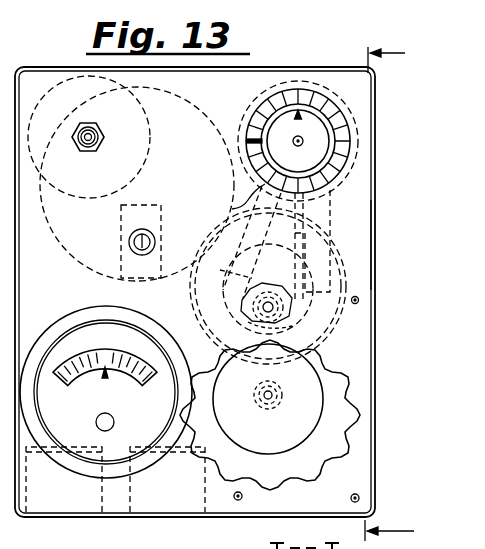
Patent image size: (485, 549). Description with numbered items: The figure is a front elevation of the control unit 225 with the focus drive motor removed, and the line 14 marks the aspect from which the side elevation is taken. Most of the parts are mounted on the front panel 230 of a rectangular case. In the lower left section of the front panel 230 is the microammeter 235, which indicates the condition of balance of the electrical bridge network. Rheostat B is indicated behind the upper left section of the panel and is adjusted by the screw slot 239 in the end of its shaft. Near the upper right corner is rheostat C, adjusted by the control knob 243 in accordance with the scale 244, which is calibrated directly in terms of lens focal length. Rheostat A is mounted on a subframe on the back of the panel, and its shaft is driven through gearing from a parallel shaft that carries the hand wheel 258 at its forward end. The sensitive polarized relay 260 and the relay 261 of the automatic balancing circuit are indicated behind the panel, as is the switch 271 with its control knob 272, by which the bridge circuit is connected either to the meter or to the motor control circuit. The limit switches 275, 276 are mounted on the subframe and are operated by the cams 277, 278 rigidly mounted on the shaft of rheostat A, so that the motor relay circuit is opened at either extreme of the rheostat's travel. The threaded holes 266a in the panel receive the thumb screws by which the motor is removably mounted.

The control unit 225 is at (274, 62).
The front panel 230 is at (373, 243).
The rheostat B is at (45, 78).
The sensitive polarized relay 260 is at (186, 92).
The screw slot 239 is at (112, 121).
The rheostat C is at (362, 130).
The control knob 243 is at (318, 141).
The scale 244 is at (341, 153).
The limit switch 276 is at (224, 209).
The limit switch 275 is at (317, 224).
The rheostat A is at (342, 329).
The cam 277 is at (256, 298).
The cam 278 is at (277, 314).
The switch 271 is at (121, 222).
The control knob 272 is at (142, 238).
The microammeter 235 is at (52, 322).
The relay 261 is at (126, 494).
The hand wheel 258 is at (352, 372).
The threaded holes 266a is at (356, 493).
The section line 14— 14 is at (436, 82).